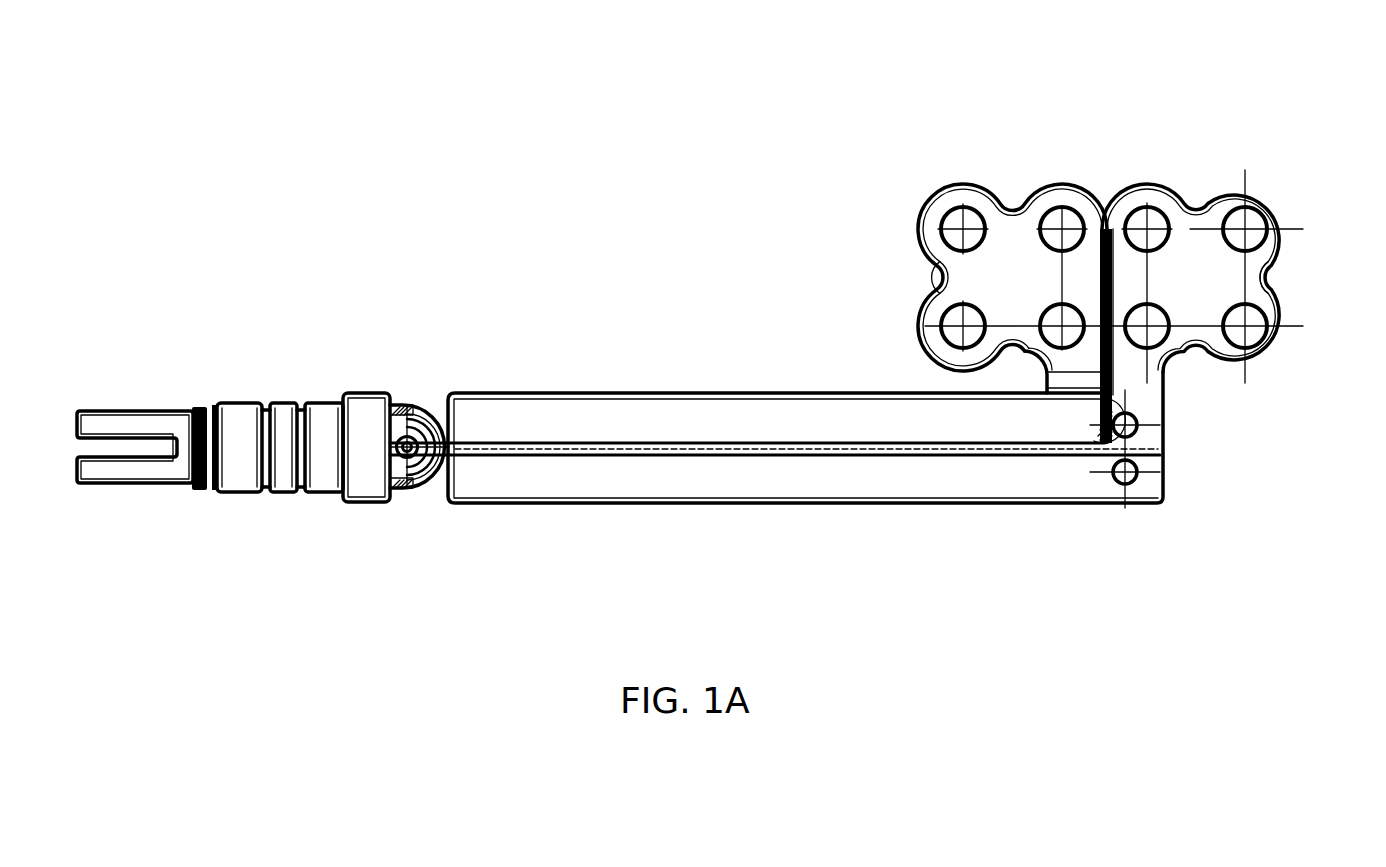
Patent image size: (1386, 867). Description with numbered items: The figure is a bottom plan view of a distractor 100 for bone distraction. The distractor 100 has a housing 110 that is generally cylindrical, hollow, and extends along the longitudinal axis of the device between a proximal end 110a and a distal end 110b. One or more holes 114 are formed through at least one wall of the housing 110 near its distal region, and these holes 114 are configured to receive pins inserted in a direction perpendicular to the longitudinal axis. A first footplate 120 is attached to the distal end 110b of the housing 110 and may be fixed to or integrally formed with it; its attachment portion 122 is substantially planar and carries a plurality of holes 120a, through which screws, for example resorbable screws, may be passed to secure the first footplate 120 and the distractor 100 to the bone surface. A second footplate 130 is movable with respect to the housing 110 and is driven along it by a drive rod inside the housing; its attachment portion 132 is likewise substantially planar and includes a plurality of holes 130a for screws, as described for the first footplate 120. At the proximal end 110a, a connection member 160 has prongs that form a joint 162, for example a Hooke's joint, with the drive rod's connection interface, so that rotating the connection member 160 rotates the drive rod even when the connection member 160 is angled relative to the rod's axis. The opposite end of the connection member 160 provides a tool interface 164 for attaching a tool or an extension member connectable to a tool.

The distractor 100 is at (700, 130).
The housing 110 is at (690, 362).
The proximal end 110a is at (515, 385).
The distal end 110b is at (1085, 505).
The holes 114 is at (1176, 443).
The first footplate 120 is at (1272, 183).
The holes 120a is at (1270, 245).
The attachment portion 122 is at (1252, 290).
The second footplate 130 is at (1070, 182).
The holes 130a is at (937, 237).
The attachment portion 132 is at (972, 283).
The connection member 160 is at (300, 395).
The joint 162 is at (432, 500).
The tool interface 164 is at (147, 490).